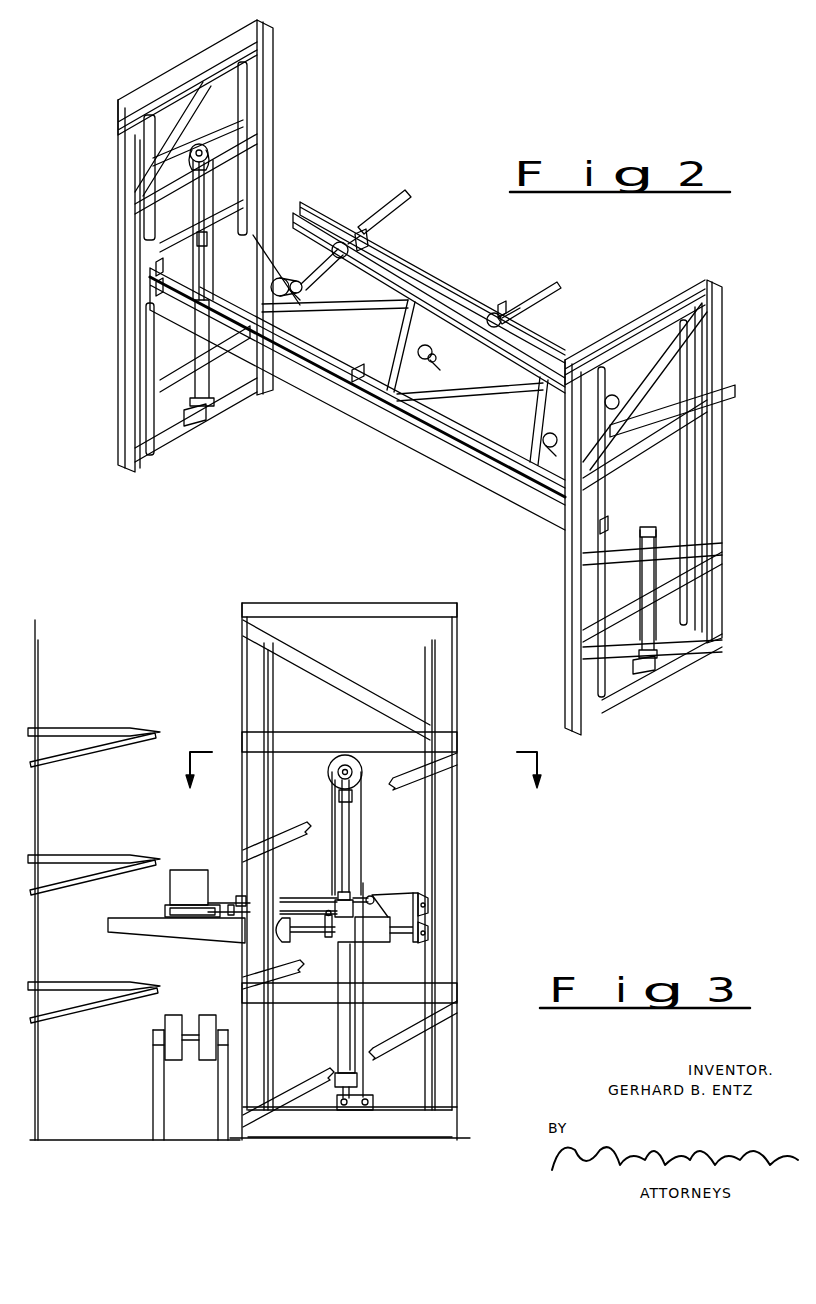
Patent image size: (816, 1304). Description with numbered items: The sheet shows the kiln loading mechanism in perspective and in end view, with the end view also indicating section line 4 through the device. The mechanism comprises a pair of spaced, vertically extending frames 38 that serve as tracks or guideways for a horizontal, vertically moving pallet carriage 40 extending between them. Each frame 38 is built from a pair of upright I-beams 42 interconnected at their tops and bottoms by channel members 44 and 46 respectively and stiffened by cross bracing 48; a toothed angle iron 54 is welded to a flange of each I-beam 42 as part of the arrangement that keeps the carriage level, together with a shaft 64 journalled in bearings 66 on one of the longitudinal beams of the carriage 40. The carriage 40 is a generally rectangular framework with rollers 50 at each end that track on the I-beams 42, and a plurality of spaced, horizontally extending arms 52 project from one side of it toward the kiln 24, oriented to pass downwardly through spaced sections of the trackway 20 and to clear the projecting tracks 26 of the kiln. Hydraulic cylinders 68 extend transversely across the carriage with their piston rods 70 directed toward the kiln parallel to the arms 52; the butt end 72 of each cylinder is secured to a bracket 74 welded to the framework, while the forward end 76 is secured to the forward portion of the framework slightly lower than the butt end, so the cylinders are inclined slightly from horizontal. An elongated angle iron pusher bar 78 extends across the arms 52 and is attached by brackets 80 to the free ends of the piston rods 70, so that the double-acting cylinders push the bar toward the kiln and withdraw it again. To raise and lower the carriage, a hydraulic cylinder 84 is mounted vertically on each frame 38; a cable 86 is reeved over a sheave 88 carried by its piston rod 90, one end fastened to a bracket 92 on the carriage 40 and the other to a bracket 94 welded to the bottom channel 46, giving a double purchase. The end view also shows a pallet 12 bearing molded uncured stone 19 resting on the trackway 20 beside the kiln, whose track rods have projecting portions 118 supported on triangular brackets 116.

In FIG. 3, the pallet 12 is at (164, 908).
In FIG. 3, the molded uncured stone 19 is at (178, 870).
In FIG. 3, the second trackway 20 is at (150, 1068).
In FIG. 3, the kiln 24 is at (40, 645).
In FIG. 3, the projecting tracks 26 is at (58, 712).
In FIG. 2, the vertically extending frame 38 is at (116, 212).
In FIG. 3, the vertically extending frame 38 is at (462, 810).
In FIG. 2, the pallet carriage 40 is at (378, 430).
In FIG. 3, the pallet carriage 40 is at (386, 945).
In FIG. 2, the upright I-beam 42 is at (118, 146).
In FIG. 3, the upright I-beam 42 is at (243, 668).
In FIG. 2, the top channel member 44 is at (178, 85).
In FIG. 3, the top channel member 44 is at (360, 606).
In FIG. 2, the bottom channel member 46 is at (166, 445).
In FIG. 3, the bottom channel member 46 is at (378, 1130).
In FIG. 2, the cross bracing 48 is at (200, 112).
In FIG. 3, the cross bracing 48 is at (340, 660).
In FIG. 2, the roller 50 is at (262, 210).
In FIG. 3, the roller 50 is at (248, 960).
In FIG. 2, the horizontally extending arm 52 is at (380, 205).
In FIG. 3, the horizontally extending arm 52 is at (138, 936).
In FIG. 2, the angle iron 54 is at (252, 112).
In FIG. 3, the angle iron 54 is at (276, 698).
In FIG. 2, the shaft 64 is at (470, 458).
In FIG. 2, the bearing 66 is at (354, 362).
In FIG. 2, the hydraulic cylinder 68 is at (306, 266).
In FIG. 3, the hydraulic cylinder 68 is at (314, 898).
In FIG. 2, the piston rod 70 is at (365, 235).
In FIG. 3, the piston rod 70 is at (236, 935).
In FIG. 2, the butt end 72 is at (304, 282).
In FIG. 2, the bracket 74 is at (252, 318).
In FIG. 3, the bracket 74 is at (384, 914).
In FIG. 2, the forward end 76 is at (340, 220).
In FIG. 2, the angle iron pusher bar 78 is at (406, 262).
In FIG. 3, the angle iron pusher bar 78 is at (228, 896).
In FIG. 2, the bracket 80 is at (372, 244).
In FIG. 3, the bracket 80 is at (240, 894).
In FIG. 2, the hydraulic cylinder 84 is at (206, 360).
In FIG. 3, the hydraulic cylinder 84 is at (338, 1030).
In FIG. 2, the cable 86 is at (209, 178).
In FIG. 3, the cable 86 is at (330, 801).
In FIG. 2, the sheave 88 is at (212, 133).
In FIG. 3, the sheave 88 is at (332, 768).
In FIG. 2, the piston rod 90 is at (200, 193).
In FIG. 3, the piston rod 90 is at (352, 834).
In FIG. 2, the bracket 92 is at (198, 236).
In FIG. 3, the bracket 92 is at (328, 938).
In FIG. 2, the bracket 94 is at (192, 420).
In FIG. 3, the bracket 94 is at (374, 1093).
In FIG. 3, the triangular supporting bracket 116 is at (64, 750).
In FIG. 3, the projecting portion of rod 118 is at (108, 730).
In FIG. 3, the section line 4- 4 is at (362, 782).